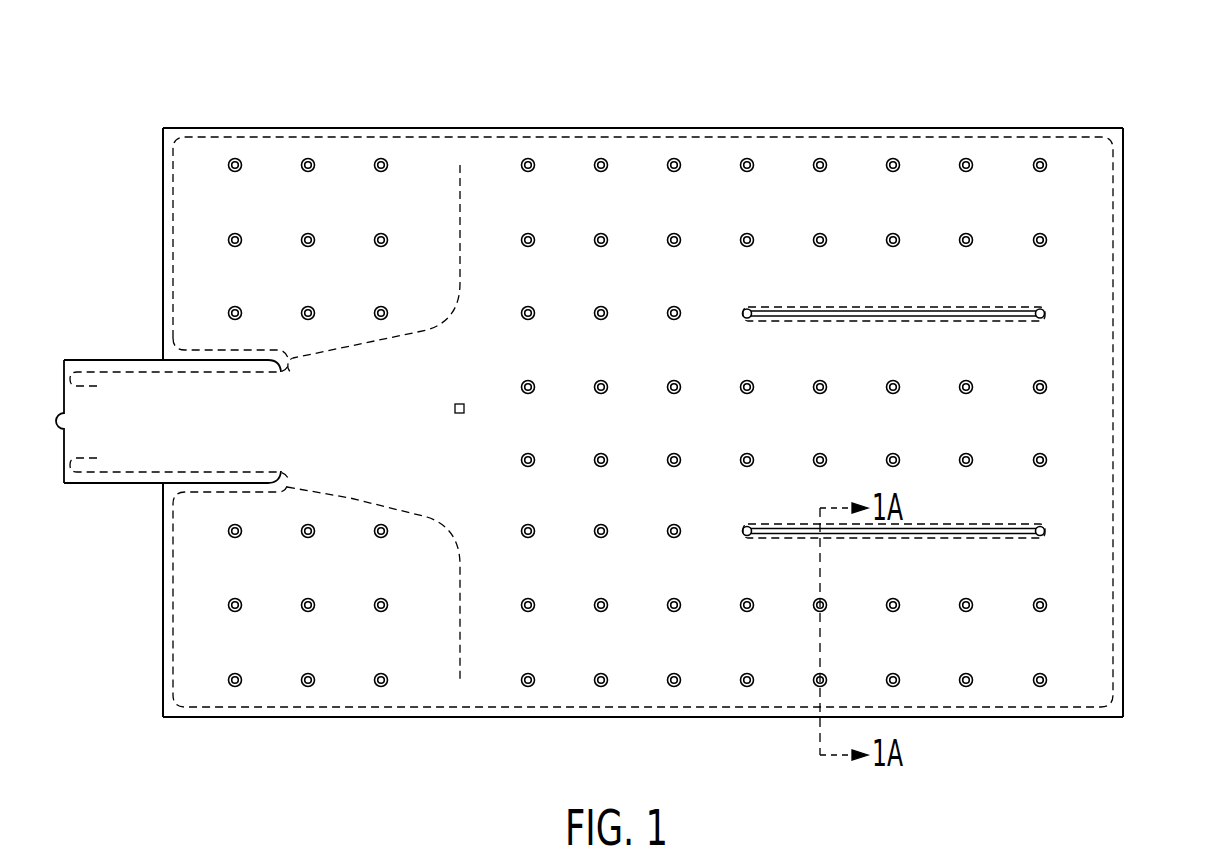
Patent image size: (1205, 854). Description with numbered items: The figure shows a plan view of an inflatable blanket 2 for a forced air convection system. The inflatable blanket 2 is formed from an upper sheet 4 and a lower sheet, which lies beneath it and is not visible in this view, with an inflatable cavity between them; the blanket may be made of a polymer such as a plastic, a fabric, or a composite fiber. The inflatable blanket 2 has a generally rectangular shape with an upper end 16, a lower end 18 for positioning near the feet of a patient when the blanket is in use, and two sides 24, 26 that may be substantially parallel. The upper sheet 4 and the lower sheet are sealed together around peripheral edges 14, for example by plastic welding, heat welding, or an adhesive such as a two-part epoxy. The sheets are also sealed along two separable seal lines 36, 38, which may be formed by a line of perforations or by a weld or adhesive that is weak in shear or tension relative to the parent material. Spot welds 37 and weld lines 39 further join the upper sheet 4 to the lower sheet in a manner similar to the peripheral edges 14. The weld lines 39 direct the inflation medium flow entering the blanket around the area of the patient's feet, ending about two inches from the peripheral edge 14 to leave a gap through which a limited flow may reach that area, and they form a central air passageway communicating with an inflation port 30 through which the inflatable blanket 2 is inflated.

The inflatable blanket 2 is at (1110, 102).
The upper sheet 4 is at (1098, 203).
The peripheral edges 14 is at (360, 713).
The upper end 16 is at (1123, 257).
The lower end 18 is at (163, 210).
The side 24 is at (780, 128).
The side 26 is at (578, 718).
The inflation port 30 is at (140, 437).
The separable seal line 36 is at (925, 310).
The spot welds 37 is at (618, 387).
The separable seal line 38 is at (973, 527).
The weld lines 39 is at (350, 498).